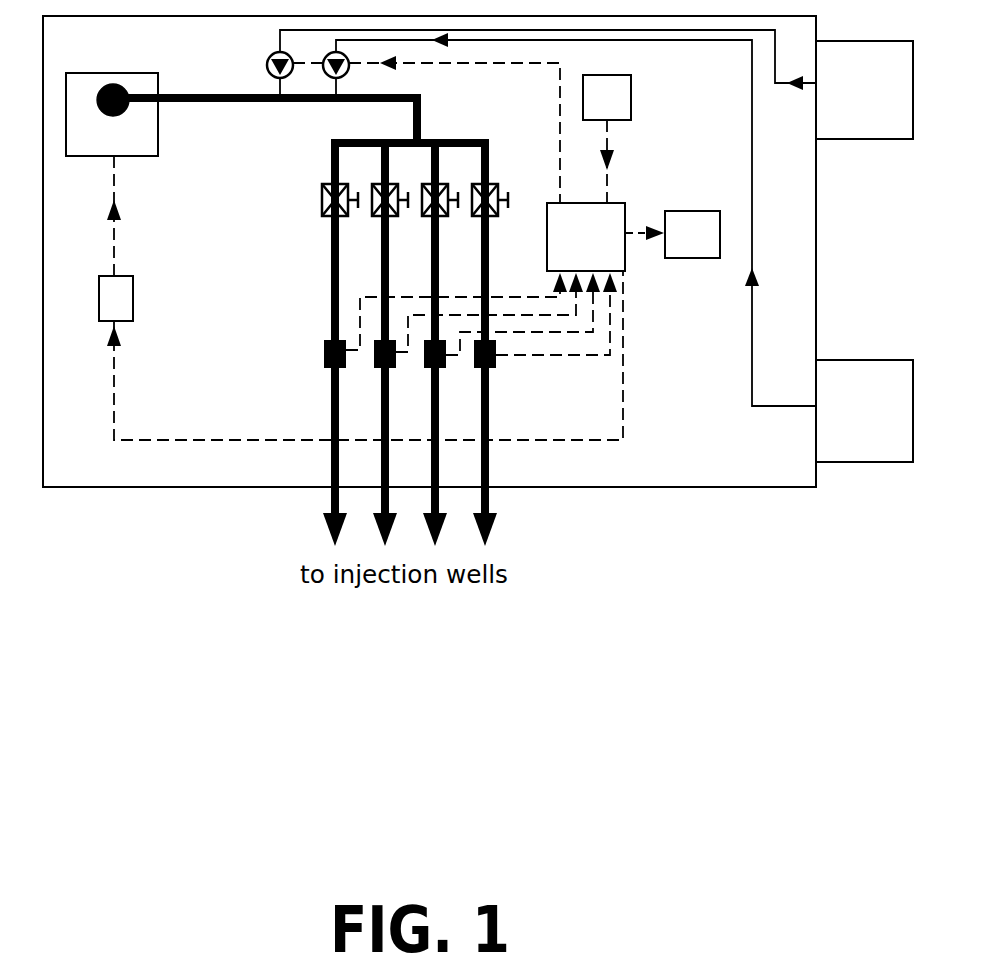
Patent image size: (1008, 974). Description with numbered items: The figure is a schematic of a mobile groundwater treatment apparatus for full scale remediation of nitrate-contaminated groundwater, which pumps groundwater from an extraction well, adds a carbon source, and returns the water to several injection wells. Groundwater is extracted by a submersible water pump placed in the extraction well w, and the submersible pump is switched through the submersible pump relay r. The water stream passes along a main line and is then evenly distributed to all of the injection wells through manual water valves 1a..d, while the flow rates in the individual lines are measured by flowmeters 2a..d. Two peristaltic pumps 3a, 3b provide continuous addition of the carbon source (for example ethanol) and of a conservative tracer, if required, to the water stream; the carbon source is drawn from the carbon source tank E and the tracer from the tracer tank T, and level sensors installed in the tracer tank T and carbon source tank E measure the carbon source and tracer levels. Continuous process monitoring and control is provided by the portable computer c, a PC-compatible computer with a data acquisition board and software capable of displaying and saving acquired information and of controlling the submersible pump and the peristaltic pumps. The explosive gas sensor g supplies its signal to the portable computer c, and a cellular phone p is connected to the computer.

The water valves 1a..d is at (385, 219).
The flowmeters 2a..d is at (429, 345).
The ethanol peristaltic pump 3a is at (520, 62).
The tracer peristaltic pump 3b is at (554, 219).
The extraction well with a submersible pump w is at (112, 114).
The submersible pump relay r is at (361, 298).
The explosive gas sensor g is at (607, 139).
The portable computer c is at (586, 247).
The cellular phone p is at (672, 234).
The carbon source tank E is at (864, 90).
The tracer tank T is at (864, 411).